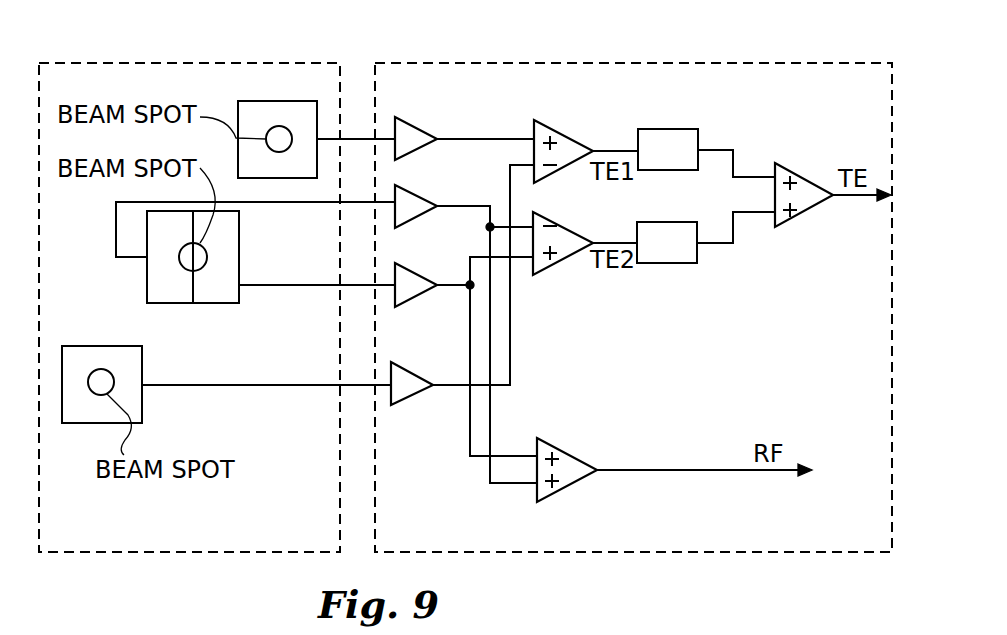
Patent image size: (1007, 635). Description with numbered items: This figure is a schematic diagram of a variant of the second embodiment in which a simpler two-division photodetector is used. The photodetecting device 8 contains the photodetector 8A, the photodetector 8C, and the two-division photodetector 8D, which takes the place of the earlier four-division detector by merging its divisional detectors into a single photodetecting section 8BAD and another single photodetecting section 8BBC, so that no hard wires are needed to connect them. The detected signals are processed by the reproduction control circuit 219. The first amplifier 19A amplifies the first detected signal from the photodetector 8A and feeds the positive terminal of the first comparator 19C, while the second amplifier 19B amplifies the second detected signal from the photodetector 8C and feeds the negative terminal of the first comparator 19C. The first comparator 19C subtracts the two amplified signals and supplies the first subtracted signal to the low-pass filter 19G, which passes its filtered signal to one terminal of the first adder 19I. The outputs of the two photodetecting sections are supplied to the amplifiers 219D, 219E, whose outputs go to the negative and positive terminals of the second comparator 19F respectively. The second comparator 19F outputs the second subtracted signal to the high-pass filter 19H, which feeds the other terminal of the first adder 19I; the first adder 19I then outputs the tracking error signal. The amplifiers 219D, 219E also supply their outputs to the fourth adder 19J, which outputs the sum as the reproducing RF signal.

The photodetecting device 8 is at (296, 63).
The reproduction control circuit 219 is at (686, 63).
The photodetector 8A is at (254, 101).
The 2-division photodetector 8D is at (190, 274).
The photodetecting section 8BBC is at (146, 268).
The photodetecting section 8BAD is at (239, 222).
The photodetector 8C is at (68, 423).
The first amplifier 19A is at (404, 119).
The amplifier 219D is at (424, 207).
The amplifier 219E is at (424, 282).
The second amplifier 19B is at (426, 381).
The first comparator 19C is at (541, 122).
The second comparator 19F is at (544, 216).
The low-pass filter 19G is at (650, 129).
The high-pass filter 19H is at (655, 263).
The first adder 19I is at (805, 181).
The fourth adder 19J is at (545, 446).